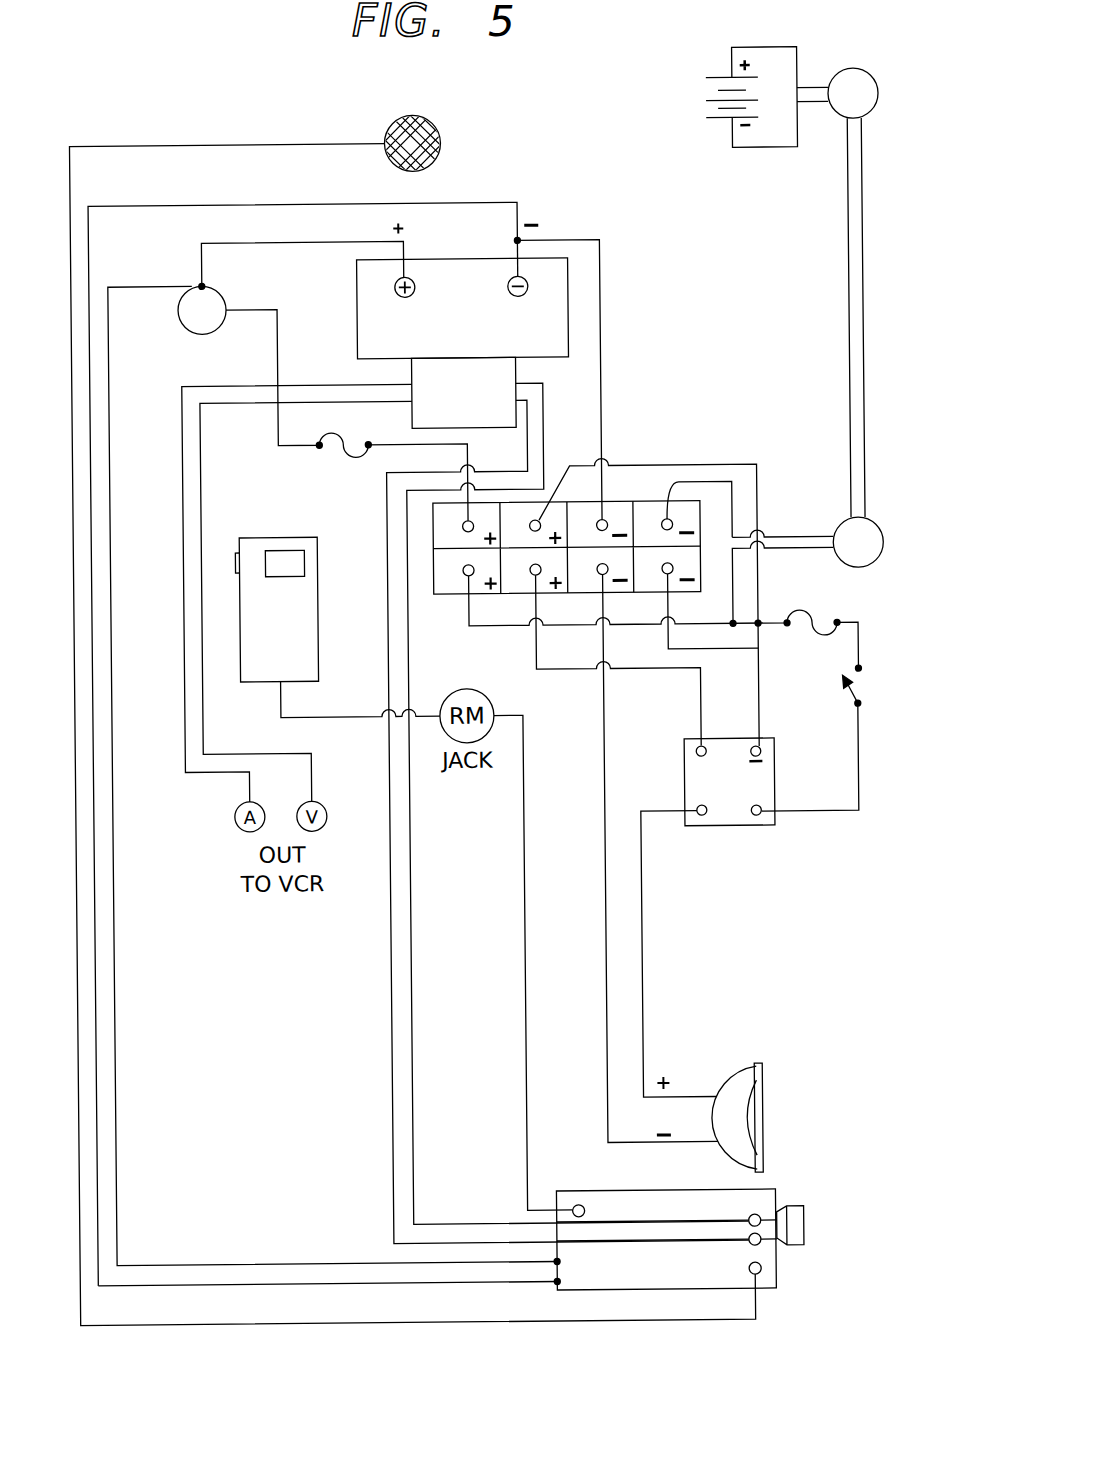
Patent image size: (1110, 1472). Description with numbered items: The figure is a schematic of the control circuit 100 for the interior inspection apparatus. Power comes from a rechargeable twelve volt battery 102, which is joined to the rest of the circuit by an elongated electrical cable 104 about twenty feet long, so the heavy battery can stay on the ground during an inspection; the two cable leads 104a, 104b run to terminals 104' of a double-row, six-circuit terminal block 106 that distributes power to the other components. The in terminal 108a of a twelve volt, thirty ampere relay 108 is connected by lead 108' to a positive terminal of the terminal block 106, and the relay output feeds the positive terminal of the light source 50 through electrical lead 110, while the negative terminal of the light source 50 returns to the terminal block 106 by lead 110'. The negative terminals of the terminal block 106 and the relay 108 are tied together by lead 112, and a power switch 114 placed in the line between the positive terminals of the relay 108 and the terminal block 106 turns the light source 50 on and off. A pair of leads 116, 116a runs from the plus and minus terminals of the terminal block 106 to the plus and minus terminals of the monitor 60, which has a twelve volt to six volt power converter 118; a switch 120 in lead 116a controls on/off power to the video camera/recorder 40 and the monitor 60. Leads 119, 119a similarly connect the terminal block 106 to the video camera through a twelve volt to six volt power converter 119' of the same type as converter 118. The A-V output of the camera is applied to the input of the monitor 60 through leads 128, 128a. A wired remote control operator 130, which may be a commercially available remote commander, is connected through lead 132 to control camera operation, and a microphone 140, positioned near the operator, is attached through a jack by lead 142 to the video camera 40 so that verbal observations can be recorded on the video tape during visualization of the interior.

The video camera/recorder 40 is at (758, 1193).
The light source 50 is at (723, 1086).
The monitor 60 is at (571, 300).
The control circuit 100 is at (515, 180).
The battery 102 is at (870, 73).
The electrical cable 104 is at (824, 318).
The cable lead 104a is at (800, 536).
The cable lead 104b is at (791, 562).
The terminal 104' is at (713, 475).
The terminal block 106 is at (622, 505).
The relay 108 is at (748, 801).
The lead 108' is at (619, 661).
The in terminal 108a is at (695, 753).
The electrical lead 110 is at (679, 953).
The lead 110' is at (634, 859).
The lead 112 is at (758, 696).
The power switch 114 is at (857, 771).
The lead 116 is at (280, 334).
The lead 116a is at (603, 375).
The power converter 118 is at (398, 287).
The lead 119 is at (334, 776).
The power converter 119' is at (329, 1302).
The lead 119a is at (92, 265).
The switch 120 is at (216, 291).
The lead 128 is at (410, 890).
The lead 128a is at (386, 999).
The wired remote control operator 130 is at (295, 603).
The lead 132 is at (522, 988).
The microphone 140 is at (445, 143).
The lead 142 is at (247, 1320).